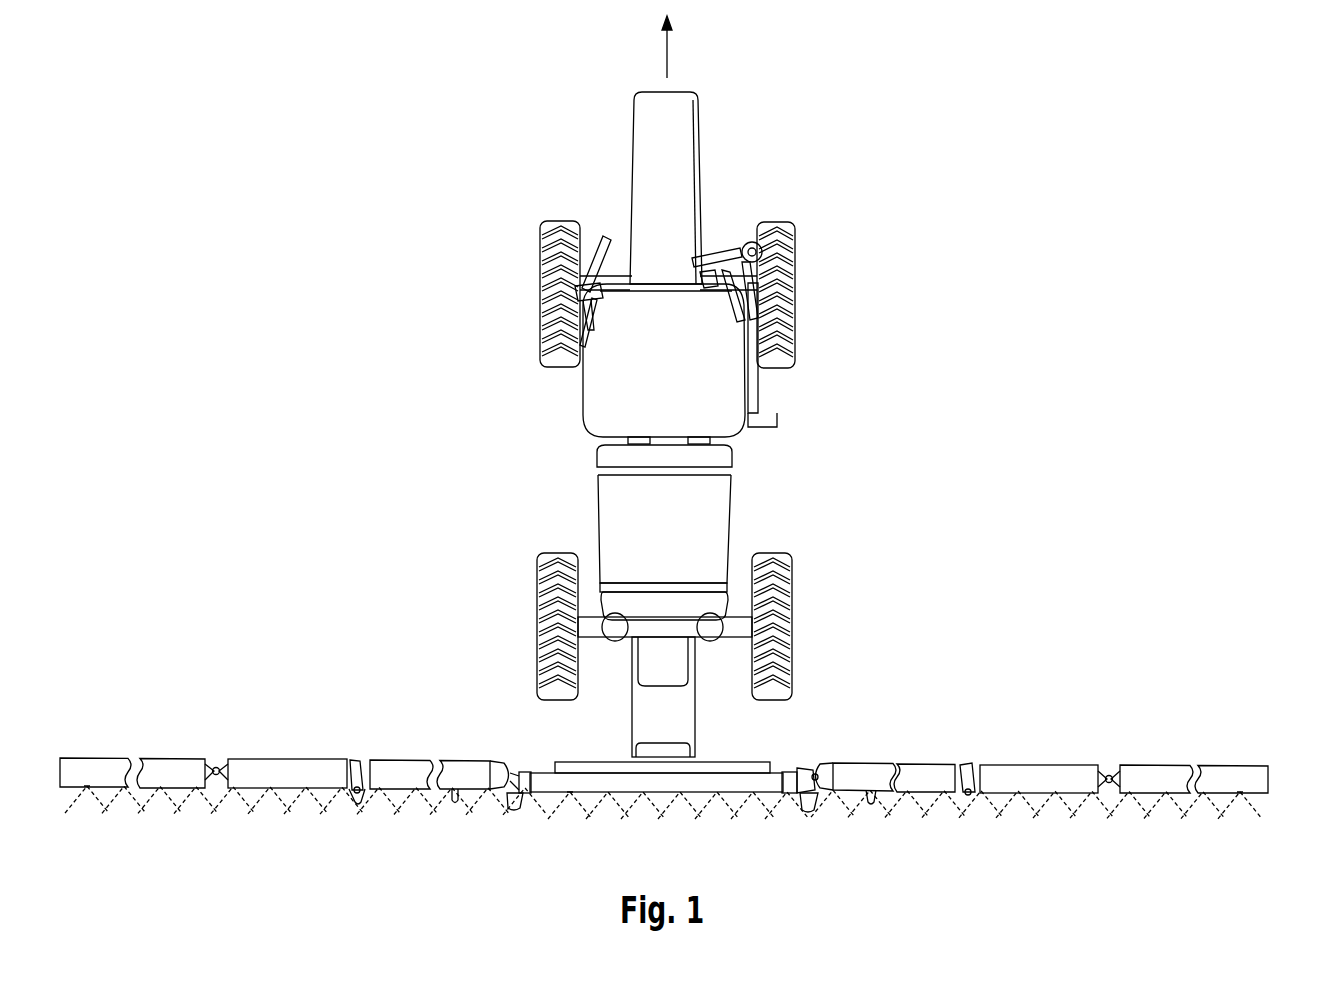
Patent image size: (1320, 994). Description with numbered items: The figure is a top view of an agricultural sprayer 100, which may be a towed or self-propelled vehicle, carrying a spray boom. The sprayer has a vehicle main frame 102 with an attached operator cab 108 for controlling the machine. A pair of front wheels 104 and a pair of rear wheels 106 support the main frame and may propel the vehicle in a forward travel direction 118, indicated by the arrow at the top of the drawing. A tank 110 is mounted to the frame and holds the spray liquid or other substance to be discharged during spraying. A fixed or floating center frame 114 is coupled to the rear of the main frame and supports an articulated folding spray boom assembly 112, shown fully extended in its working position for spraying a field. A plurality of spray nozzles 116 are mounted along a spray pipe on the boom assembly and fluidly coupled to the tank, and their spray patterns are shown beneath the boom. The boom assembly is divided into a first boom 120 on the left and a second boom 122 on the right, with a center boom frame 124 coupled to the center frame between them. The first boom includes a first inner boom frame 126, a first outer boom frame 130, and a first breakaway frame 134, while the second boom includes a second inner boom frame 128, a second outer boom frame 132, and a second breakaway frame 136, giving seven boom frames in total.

The agricultural sprayer 100 is at (1133, 145).
The vehicle main frame 102 is at (630, 278).
The front wheels 104 is at (540, 268).
The rear wheels 106 is at (537, 622).
The operator cab 108 is at (618, 383).
The tank 110 is at (708, 518).
The spray boom assembly 112 is at (1276, 805).
The center frame 114 is at (672, 714).
The spray nozzles 116 is at (88, 786).
The forward travel direction 118 is at (667, 50).
The first boom 120 is at (265, 705).
The second boom 122 is at (1068, 713).
The center boom frame 124 is at (705, 790).
The first inner boom frame 126 is at (412, 765).
The second inner boom frame 128 is at (923, 770).
The first outer boom frame 130 is at (289, 762).
The second outer boom frame 132 is at (1036, 770).
The first breakaway frame 134 is at (153, 760).
The second breakaway frame 136 is at (1175, 770).